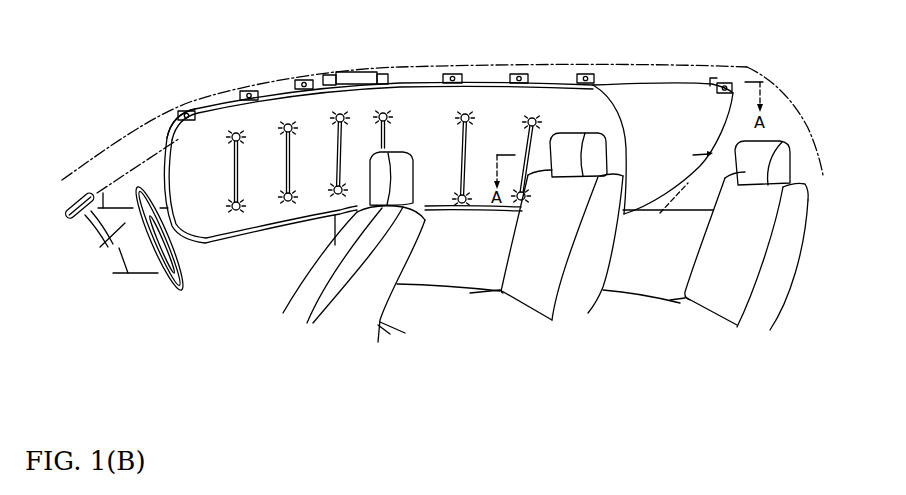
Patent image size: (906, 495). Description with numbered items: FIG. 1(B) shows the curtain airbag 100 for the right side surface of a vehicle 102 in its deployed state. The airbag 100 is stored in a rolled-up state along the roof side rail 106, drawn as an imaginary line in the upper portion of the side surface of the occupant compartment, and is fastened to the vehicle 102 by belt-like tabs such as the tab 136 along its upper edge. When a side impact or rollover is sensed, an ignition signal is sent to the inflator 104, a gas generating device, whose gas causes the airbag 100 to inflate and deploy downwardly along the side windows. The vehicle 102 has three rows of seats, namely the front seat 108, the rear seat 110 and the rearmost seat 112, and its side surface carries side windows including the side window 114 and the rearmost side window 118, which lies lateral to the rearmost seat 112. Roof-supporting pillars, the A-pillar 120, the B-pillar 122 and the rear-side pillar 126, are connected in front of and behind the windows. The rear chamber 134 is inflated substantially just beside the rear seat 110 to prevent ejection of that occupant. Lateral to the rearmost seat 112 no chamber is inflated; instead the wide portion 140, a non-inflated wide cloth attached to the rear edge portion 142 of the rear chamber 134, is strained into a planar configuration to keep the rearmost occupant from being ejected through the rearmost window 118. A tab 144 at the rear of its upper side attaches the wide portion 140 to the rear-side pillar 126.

The airbag 100 is at (415, 79).
The vehicle 102 is at (108, 135).
The inflator 104 is at (323, 74).
The roof side rail 106 is at (220, 91).
The front seat 108 is at (358, 313).
The rear seat 110 is at (575, 308).
The rearmost seat 112 is at (760, 313).
The side window 114 is at (157, 173).
The rearmost side window 118 is at (658, 212).
The A-pillar 120 is at (168, 108).
The B-pillar 122 is at (335, 215).
The rear-side pillar 126 is at (775, 100).
The rear chamber 134 is at (547, 100).
The tab 136 is at (586, 74).
The wide portion 140 is at (637, 84).
The rear edge portion 142 is at (627, 133).
The tab 144 is at (728, 82).